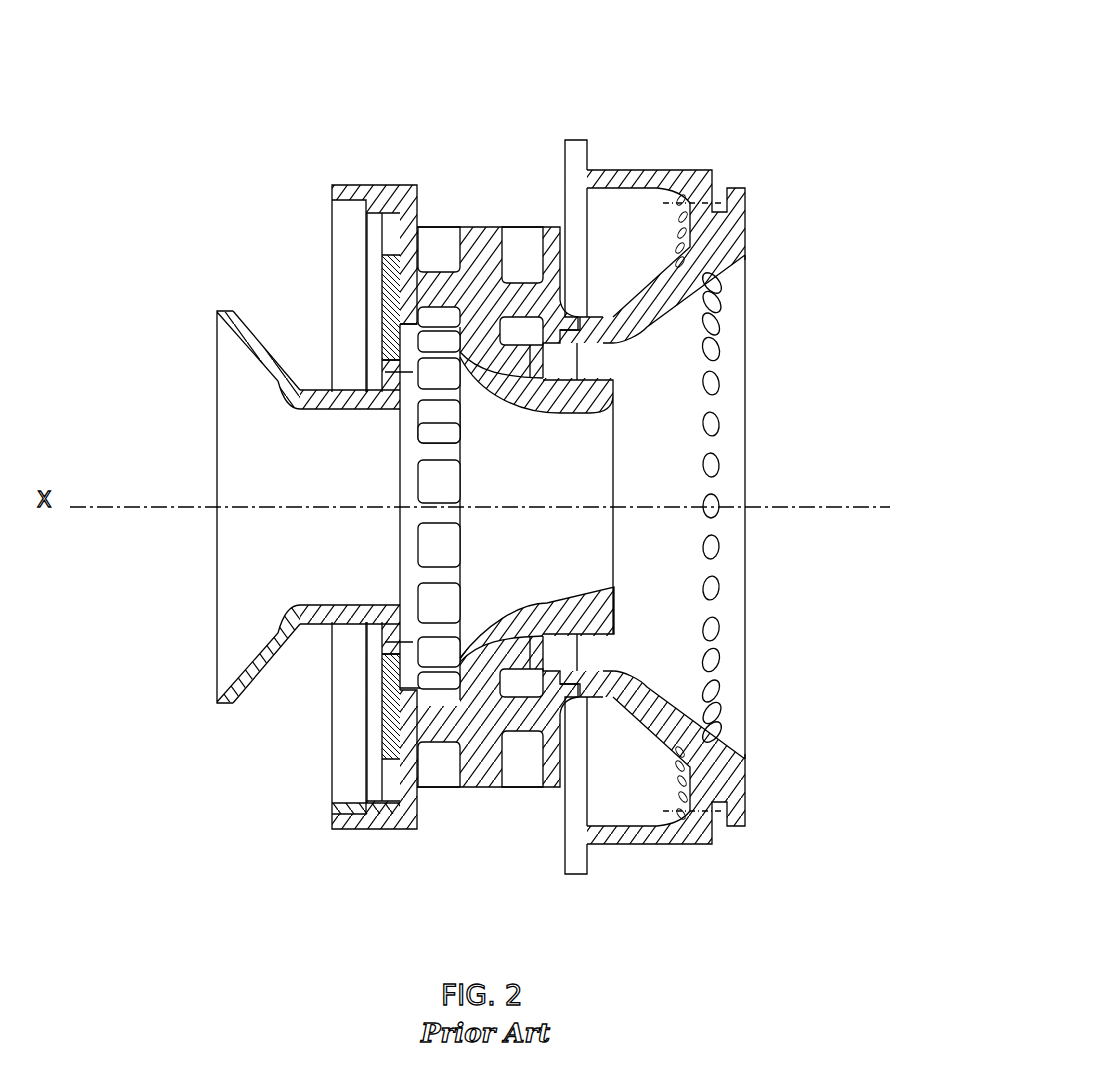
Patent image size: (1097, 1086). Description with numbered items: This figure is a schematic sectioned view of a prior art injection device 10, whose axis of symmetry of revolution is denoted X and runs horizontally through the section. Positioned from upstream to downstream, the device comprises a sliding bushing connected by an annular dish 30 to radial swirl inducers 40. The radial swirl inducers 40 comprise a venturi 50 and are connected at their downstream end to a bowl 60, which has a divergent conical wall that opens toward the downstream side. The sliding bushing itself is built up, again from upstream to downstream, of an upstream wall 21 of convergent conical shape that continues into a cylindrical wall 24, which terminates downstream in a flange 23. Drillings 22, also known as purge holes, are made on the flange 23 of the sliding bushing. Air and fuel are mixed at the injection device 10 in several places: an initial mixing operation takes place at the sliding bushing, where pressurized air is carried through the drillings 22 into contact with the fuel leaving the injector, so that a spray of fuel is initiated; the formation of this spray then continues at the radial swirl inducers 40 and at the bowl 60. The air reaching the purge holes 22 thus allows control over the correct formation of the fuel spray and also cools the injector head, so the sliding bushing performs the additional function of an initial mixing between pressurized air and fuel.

The injection device 10 is at (681, 96).
The upstream wall 21 is at (246, 630).
The drillings 22 is at (368, 381).
The flange 23 is at (364, 306).
The cylindrical wall 24 is at (321, 596).
The annular dish 30 is at (349, 234).
The radial swirl inducers 40 is at (470, 233).
The venturi 50 is at (561, 602).
The bowl 60 is at (722, 226).